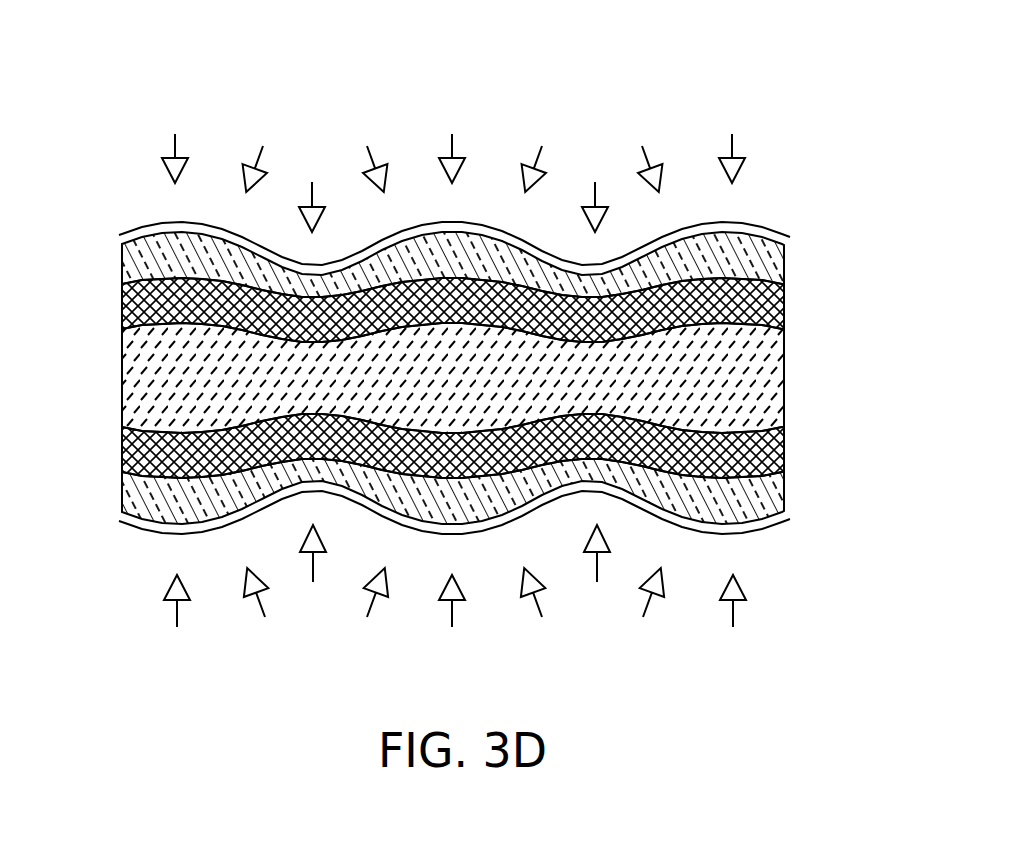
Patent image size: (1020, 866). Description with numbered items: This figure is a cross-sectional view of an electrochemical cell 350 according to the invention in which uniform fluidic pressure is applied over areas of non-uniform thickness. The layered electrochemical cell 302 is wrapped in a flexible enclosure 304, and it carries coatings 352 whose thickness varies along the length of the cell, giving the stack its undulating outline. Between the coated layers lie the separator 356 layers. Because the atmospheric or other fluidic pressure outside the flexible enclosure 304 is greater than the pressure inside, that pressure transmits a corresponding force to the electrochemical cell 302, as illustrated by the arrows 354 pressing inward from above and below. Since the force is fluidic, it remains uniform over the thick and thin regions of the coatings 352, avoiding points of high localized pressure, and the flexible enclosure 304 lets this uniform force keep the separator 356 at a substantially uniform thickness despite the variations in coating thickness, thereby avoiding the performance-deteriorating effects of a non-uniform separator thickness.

The electrochemical cell 350 is at (803, 113).
The electrochemical cell 302 is at (108, 245).
The flexible enclosure 304 is at (764, 229).
The coatings 352 is at (768, 258).
The separator 356 is at (770, 302).
The arrows 354 is at (454, 382).